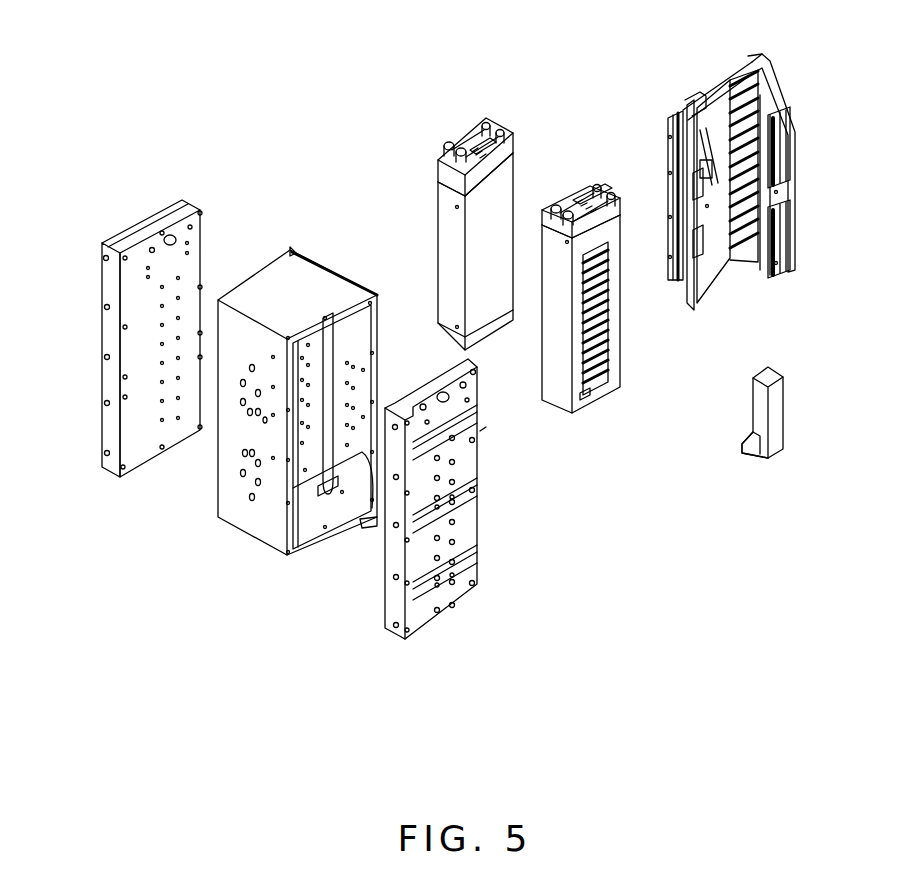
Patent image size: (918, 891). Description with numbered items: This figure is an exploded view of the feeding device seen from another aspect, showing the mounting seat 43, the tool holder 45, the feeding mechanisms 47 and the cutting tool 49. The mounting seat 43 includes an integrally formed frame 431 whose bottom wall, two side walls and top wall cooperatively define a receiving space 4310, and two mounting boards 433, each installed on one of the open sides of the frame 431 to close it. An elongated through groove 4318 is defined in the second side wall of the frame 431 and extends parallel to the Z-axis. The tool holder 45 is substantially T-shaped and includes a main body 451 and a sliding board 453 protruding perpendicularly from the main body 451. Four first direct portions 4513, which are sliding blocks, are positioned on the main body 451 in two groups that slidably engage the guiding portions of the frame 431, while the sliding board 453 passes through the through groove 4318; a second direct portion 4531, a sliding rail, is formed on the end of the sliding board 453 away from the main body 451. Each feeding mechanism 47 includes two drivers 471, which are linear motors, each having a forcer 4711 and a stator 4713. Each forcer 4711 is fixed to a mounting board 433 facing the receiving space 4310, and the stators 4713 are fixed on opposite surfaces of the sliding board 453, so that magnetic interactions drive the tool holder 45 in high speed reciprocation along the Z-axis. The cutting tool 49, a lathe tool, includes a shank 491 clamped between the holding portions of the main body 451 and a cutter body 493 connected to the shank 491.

The mounting seat 43 is at (210, 647).
The frame 431 is at (260, 522).
The mounting board 433 is at (453, 593).
The receiving space 4310 is at (349, 345).
The elongated through groove 4318 is at (332, 348).
The tool holder 45 is at (693, 2).
The main body 451 is at (765, 72).
The sliding board 453 is at (731, 70).
The second direct portion 4531 is at (668, 122).
The first direct portion 4513 is at (767, 267).
The feeding mechanism 47 is at (448, 192).
The driver 471 is at (728, 410).
The forcer 4711 is at (593, 395).
The stator 4713 is at (713, 258).
The cutting tool 49 is at (732, 424).
The shank 491 is at (760, 391).
The cutter body 493 is at (750, 447).